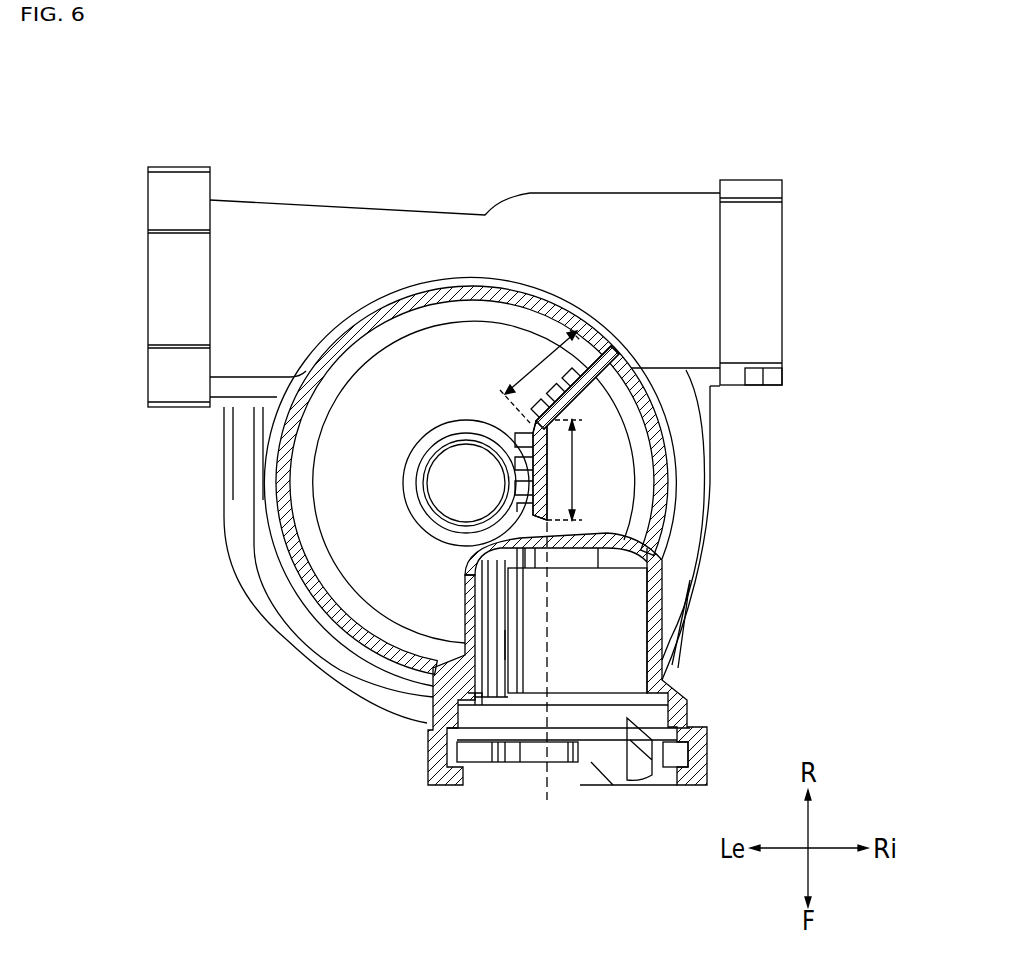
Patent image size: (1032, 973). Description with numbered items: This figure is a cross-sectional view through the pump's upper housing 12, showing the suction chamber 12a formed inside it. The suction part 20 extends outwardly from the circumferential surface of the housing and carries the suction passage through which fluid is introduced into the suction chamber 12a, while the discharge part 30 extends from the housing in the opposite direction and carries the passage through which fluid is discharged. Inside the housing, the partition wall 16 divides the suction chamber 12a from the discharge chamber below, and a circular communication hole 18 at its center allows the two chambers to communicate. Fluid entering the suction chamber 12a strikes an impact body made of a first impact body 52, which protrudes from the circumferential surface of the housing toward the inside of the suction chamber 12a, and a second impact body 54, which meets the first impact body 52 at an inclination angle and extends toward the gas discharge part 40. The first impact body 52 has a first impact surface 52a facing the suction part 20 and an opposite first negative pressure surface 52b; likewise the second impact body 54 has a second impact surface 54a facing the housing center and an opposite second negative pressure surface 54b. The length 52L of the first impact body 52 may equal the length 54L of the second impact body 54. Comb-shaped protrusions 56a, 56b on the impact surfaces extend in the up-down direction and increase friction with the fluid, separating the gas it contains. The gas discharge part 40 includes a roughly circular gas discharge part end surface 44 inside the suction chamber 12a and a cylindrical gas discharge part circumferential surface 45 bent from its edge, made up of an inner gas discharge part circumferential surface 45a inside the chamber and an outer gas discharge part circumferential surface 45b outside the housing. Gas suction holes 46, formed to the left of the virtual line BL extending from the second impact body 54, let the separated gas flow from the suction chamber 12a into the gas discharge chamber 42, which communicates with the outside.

The upper housing 12 is at (670, 440).
The suction chamber 12a is at (358, 474).
The partition wall 16 is at (410, 548).
The communication hole 18 is at (456, 488).
The suction part 20 is at (305, 227).
The discharge part 30 is at (627, 210).
The gas discharge part 40 is at (660, 607).
The gas discharge chamber 42 is at (583, 717).
The gas discharge part end surface 44 is at (630, 518).
The gas discharge part circumferential surface 45 is at (568, 745).
The inner gas discharge part circumferential surface 45a is at (463, 632).
The outer gas discharge part circumferential surface 45b is at (660, 662).
The gas suction holes 46 is at (479, 690).
The first impact body 52 is at (625, 420).
The first impact surface 52a is at (562, 378).
The first negative pressure surface 52b is at (640, 396).
The length of the first impact body 52L is at (525, 372).
The second impact body 54 is at (548, 465).
The second impact surface 54a is at (512, 463).
The second negative pressure surface 54b is at (555, 505).
The length of the second impact body 54L is at (581, 470).
The protrusions 56a is at (551, 392).
The protrusions 56b is at (484, 565).
The virtual line BL is at (546, 702).